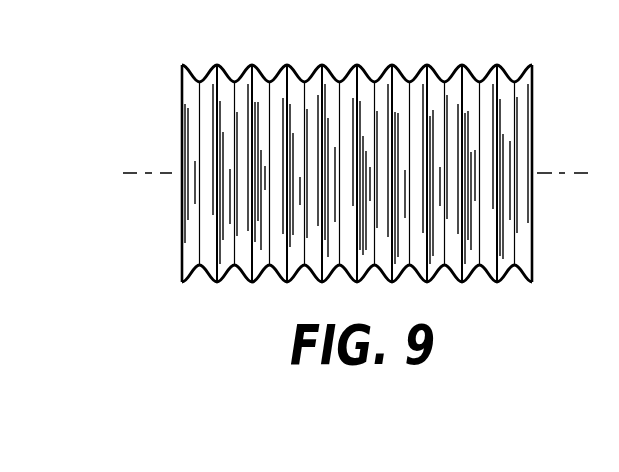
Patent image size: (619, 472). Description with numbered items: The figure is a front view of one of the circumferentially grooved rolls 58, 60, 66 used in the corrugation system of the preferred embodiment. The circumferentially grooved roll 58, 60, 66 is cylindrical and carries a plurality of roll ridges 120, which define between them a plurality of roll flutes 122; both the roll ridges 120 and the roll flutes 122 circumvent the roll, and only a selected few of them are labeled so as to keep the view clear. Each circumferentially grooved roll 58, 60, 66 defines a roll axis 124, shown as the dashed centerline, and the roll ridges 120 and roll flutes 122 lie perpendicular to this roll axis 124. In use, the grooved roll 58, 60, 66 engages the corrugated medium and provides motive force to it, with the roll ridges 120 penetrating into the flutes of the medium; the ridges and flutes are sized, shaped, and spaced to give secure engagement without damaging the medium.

The circumferentially grooved roll 58 is at (373, 147).
The circumferentially grooved roll 60 is at (373, 147).
The circumferentially grooved roll 66 is at (548, 71).
The roll ridge 120 is at (322, 63).
The roll flute 122 is at (515, 267).
The roll axis 124 is at (124, 172).